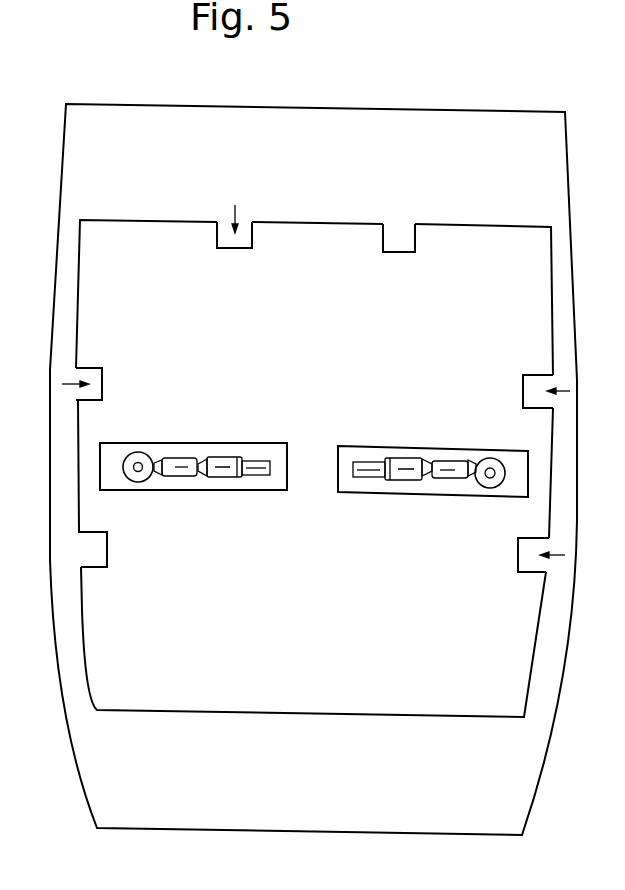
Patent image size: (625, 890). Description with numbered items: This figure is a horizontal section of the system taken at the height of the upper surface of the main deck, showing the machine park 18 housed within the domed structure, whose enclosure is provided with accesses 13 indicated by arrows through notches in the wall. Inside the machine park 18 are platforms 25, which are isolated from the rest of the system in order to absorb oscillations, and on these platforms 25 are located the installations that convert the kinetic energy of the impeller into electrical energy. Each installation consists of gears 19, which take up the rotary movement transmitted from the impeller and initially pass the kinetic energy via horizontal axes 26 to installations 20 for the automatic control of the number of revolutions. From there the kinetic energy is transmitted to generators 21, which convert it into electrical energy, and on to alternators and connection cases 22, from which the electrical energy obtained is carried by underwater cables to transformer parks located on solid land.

The accesses 13 is at (400, 228).
The machine park 18 is at (296, 469).
The gears 19 is at (138, 464).
The installations for the automatic control of the number of revolutions 20 is at (183, 465).
The generators 21 is at (230, 464).
The alternators and connection cases 22 is at (255, 466).
The platforms 25 is at (314, 456).
The horizontal axes 26 is at (200, 468).